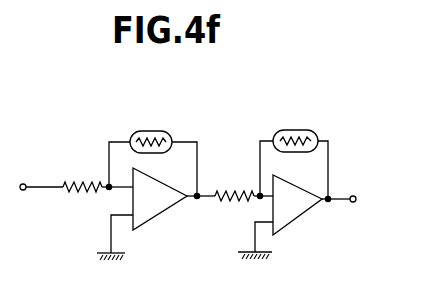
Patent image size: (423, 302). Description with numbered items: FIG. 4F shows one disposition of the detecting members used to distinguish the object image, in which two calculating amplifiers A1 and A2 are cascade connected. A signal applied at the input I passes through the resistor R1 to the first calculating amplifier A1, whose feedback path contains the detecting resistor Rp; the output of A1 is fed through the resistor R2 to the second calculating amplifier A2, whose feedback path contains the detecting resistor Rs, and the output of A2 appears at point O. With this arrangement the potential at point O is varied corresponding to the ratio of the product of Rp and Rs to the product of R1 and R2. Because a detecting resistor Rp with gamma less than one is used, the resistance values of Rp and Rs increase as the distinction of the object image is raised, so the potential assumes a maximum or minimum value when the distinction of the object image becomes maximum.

The input terminal I is at (34, 185).
The input resistor R1 is at (97, 203).
The calculating amplifier A1 is at (156, 214).
The detecting resistor Rp is at (153, 147).
The second resistor R2 is at (244, 211).
The calculating amplifier A2 is at (294, 217).
The detecting resistor Rs is at (294, 147).
The output point O is at (361, 202).